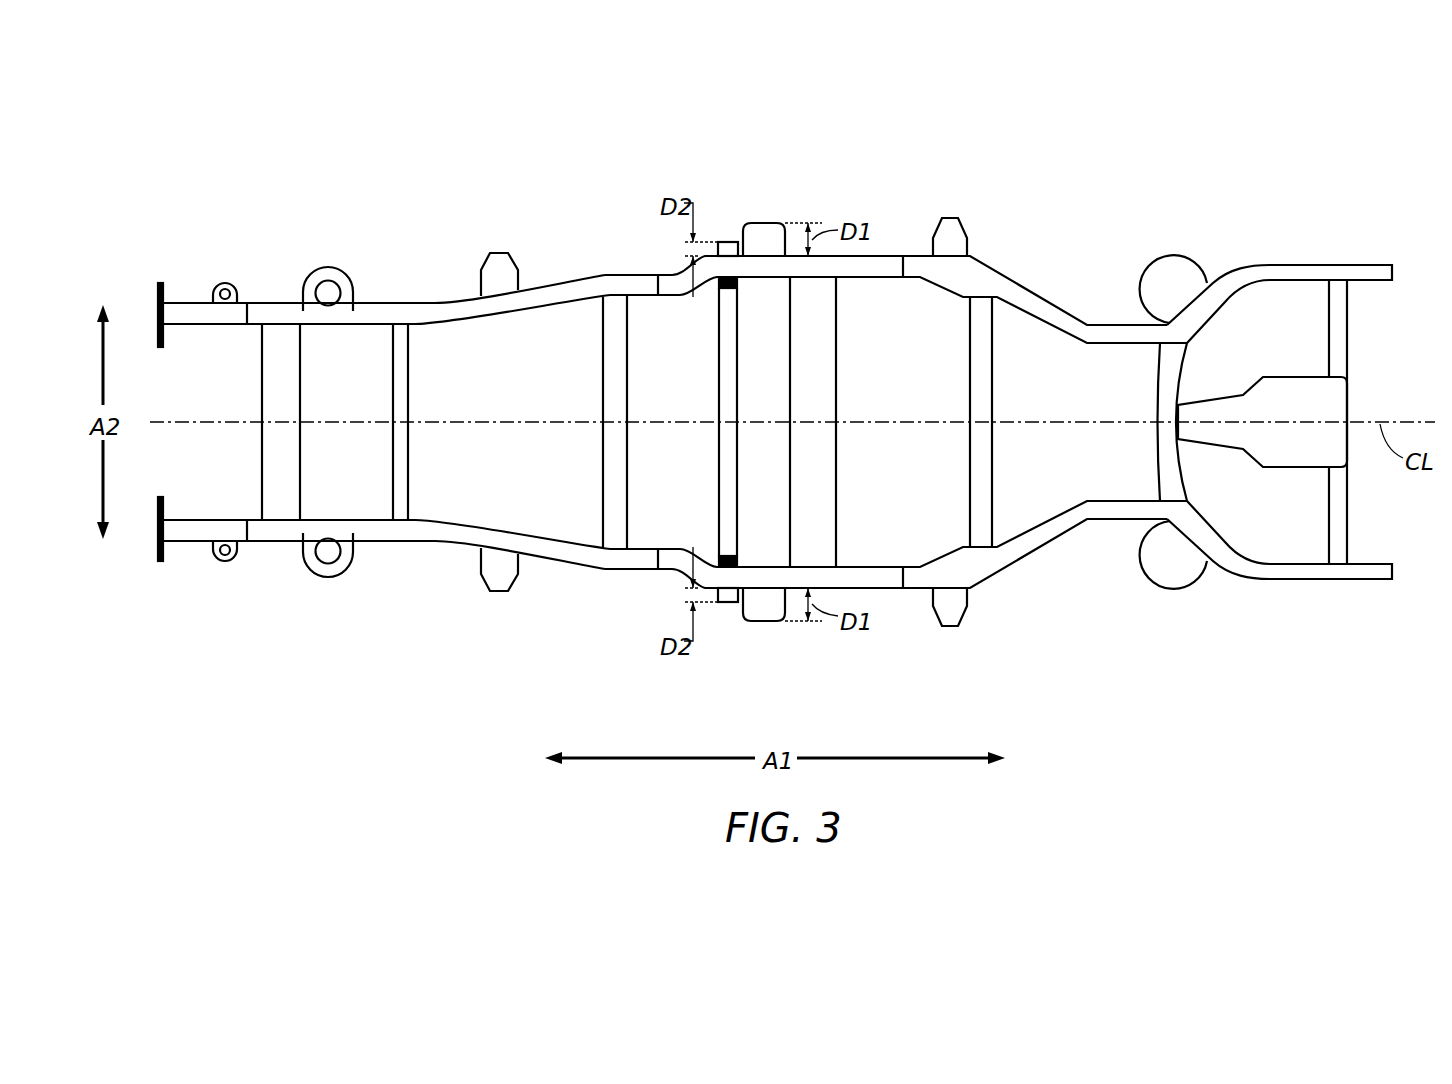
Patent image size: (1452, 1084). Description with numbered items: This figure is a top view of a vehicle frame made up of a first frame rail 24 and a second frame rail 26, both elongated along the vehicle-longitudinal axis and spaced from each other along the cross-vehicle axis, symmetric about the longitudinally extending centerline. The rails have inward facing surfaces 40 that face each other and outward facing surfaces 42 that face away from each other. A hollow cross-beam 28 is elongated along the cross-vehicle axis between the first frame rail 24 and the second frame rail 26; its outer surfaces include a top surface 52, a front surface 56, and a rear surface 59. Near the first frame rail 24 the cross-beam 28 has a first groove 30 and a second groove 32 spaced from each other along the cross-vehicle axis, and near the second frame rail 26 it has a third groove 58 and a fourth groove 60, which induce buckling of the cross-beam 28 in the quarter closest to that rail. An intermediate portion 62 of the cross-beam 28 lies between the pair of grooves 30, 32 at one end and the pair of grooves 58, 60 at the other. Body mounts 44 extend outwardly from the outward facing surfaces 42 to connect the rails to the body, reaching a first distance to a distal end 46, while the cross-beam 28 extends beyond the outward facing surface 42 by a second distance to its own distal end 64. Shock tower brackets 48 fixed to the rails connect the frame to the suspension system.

The first frame rail 24 is at (443, 545).
The second frame rail 26 is at (443, 300).
The cross-beam 28 is at (724, 438).
The first groove 30 is at (718, 558).
The second groove 32 is at (737, 562).
The inward facing surfaces 40 is at (505, 313).
The outward facing surfaces 42 is at (676, 270).
The body mounts 44 is at (757, 232).
The distal end 46 is at (770, 226).
The shock tower brackets 48 is at (318, 270).
The top surface 52 is at (724, 355).
The front surface 56 is at (718, 385).
The third groove 58 is at (718, 285).
The rear surface 59 is at (737, 338).
The fourth groove 60 is at (737, 284).
The intermediate portion 62 is at (732, 468).
The distal end 64 is at (727, 242).